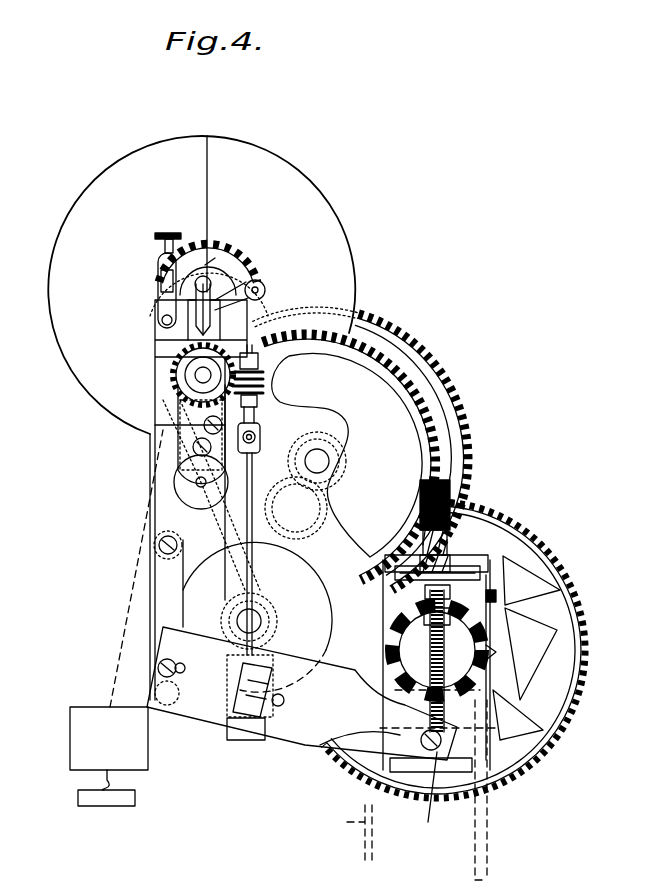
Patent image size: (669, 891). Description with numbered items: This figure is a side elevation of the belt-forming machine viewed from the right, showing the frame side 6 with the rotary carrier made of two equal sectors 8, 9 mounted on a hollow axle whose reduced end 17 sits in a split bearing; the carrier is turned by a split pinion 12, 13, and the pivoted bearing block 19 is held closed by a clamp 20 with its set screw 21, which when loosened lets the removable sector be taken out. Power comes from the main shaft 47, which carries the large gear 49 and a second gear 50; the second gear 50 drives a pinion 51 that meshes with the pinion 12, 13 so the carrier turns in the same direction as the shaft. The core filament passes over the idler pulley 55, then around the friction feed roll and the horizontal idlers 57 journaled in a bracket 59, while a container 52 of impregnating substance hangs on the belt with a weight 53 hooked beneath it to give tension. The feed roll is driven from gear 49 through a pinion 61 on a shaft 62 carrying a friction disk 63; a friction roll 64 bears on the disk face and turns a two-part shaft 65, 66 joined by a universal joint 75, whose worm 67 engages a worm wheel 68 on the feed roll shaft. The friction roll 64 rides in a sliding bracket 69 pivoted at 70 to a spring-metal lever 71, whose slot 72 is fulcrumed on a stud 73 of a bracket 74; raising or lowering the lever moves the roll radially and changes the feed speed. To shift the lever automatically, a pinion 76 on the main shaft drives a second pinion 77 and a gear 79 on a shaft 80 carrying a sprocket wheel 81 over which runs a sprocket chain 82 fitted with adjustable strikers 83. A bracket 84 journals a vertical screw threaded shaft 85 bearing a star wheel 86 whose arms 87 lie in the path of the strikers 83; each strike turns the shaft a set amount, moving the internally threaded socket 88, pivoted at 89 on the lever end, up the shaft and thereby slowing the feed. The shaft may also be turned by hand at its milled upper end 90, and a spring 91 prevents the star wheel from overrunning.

The side 6 is at (297, 416).
The carrier sector 8 is at (262, 158).
The carrier sector 9 is at (183, 150).
The pinion sector 12 is at (212, 258).
The pinion sector 13 is at (195, 237).
The reduced axle end 17 is at (208, 283).
The pivoted bearing block 19 is at (230, 285).
The clamp 20 is at (162, 291).
The set screw 21 is at (162, 232).
The main shaft 47 is at (323, 457).
The large gear 49 is at (453, 421).
The second gear 50 is at (423, 379).
The pinion 51 is at (168, 353).
The container 52 is at (70, 747).
The weight 53 is at (115, 808).
The idler pulley 55 is at (215, 302).
The idlers 57 is at (212, 494).
The bracket 59 is at (175, 442).
The pinion 61 is at (232, 618).
The shaft 62 is at (252, 630).
The friction disk 63 is at (322, 656).
The friction roll 64 is at (255, 705).
The shaft part 65 is at (252, 488).
The shaft part 66 is at (262, 398).
The worm 67 is at (262, 378).
The worm wheel 68 is at (171, 379).
The bracket 69 is at (235, 731).
The pivot 70 is at (277, 692).
The lever 71 is at (322, 720).
The slot 72 is at (176, 668).
The stud 73 is at (158, 667).
The bracket 74 is at (160, 582).
The universal joint 75 is at (259, 440).
The pinion 76 is at (348, 461).
The second pinion 77 is at (345, 507).
The gear 79 is at (568, 576).
The shaft 80 is at (486, 650).
The sprocket wheel 81 is at (488, 659).
The sprocket chain 82 is at (487, 828).
The strikers 83 is at (348, 824).
The bracket 84 is at (452, 553).
The screw threaded shaft 85 is at (437, 673).
The star wheel 86 is at (465, 562).
The arms 87 is at (490, 563).
The socket 88 is at (441, 741).
The pivot 89 is at (435, 799).
The milled upper end 90 is at (443, 478).
The spring 91 is at (493, 596).